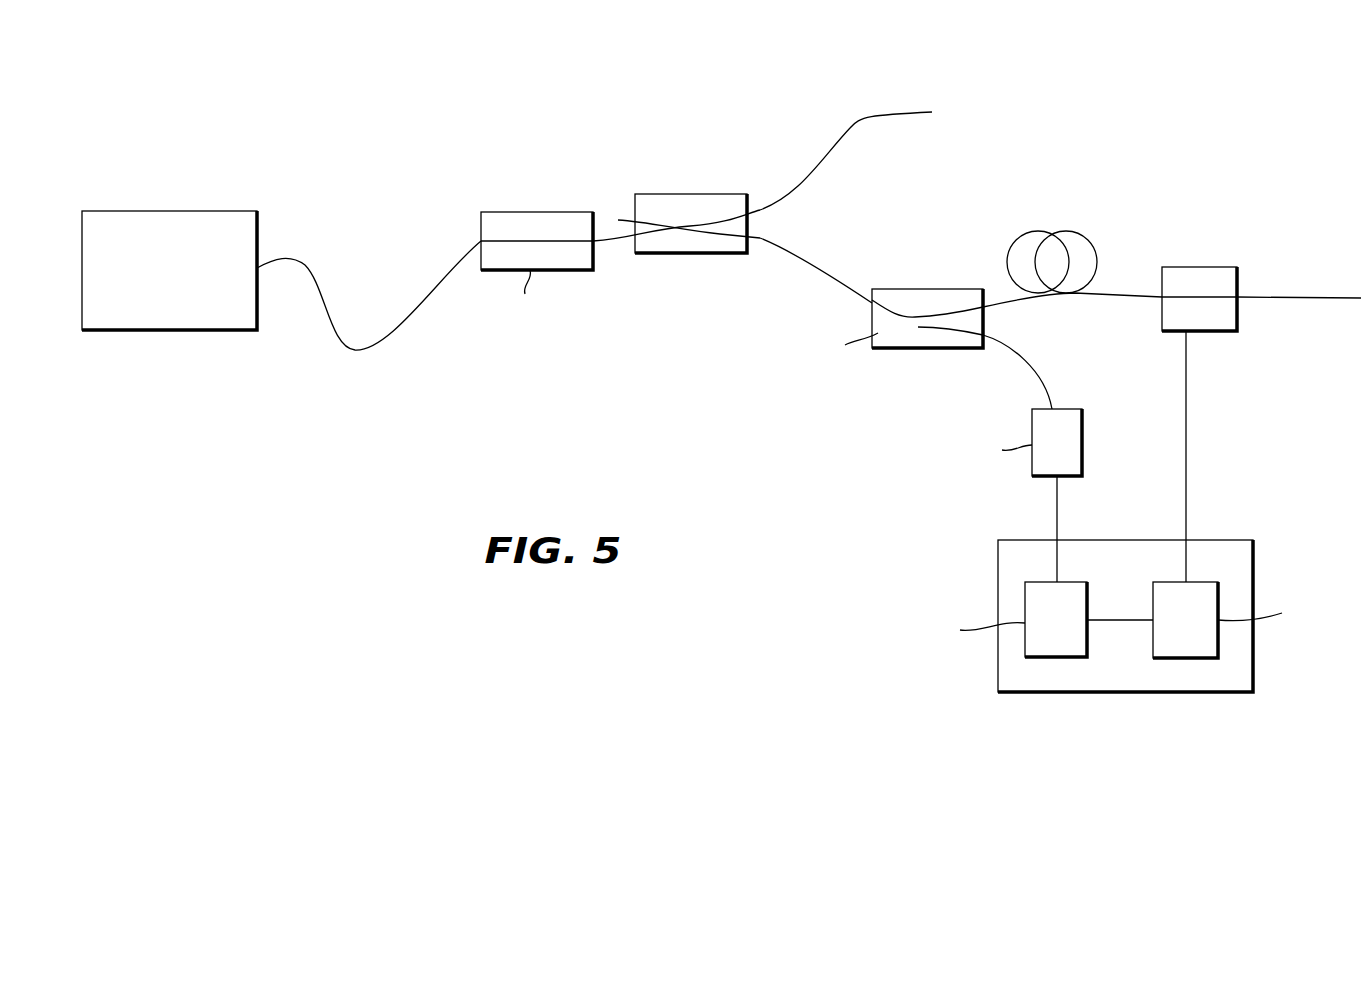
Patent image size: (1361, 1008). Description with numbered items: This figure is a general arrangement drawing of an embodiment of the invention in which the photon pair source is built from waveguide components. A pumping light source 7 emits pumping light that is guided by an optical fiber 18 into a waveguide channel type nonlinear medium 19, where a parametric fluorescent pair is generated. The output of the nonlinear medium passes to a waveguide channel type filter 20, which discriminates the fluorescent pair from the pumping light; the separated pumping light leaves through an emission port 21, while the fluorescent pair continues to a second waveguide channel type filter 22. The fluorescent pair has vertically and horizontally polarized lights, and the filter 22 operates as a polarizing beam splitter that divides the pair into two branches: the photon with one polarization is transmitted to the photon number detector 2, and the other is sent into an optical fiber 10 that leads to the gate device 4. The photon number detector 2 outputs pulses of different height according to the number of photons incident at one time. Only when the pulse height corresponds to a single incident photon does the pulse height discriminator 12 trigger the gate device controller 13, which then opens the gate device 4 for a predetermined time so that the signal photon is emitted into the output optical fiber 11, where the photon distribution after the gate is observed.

The pumping light source 7 is at (171, 212).
The optical fiber 18 is at (305, 262).
The waveguide channel type nonlinear medium 19 is at (528, 212).
The waveguide channel type filter 20 is at (687, 198).
The emission port of pumping light 21 is at (887, 112).
The waveguide channel type filter 22 is at (906, 293).
The optical fiber 10 is at (1120, 291).
The gate device 4 is at (1222, 272).
The optical fiber 11 is at (1302, 297).
The photon number detector 2 is at (1051, 456).
The pulse height discriminator 12 is at (1045, 634).
The gate device controller 13 is at (1174, 634).